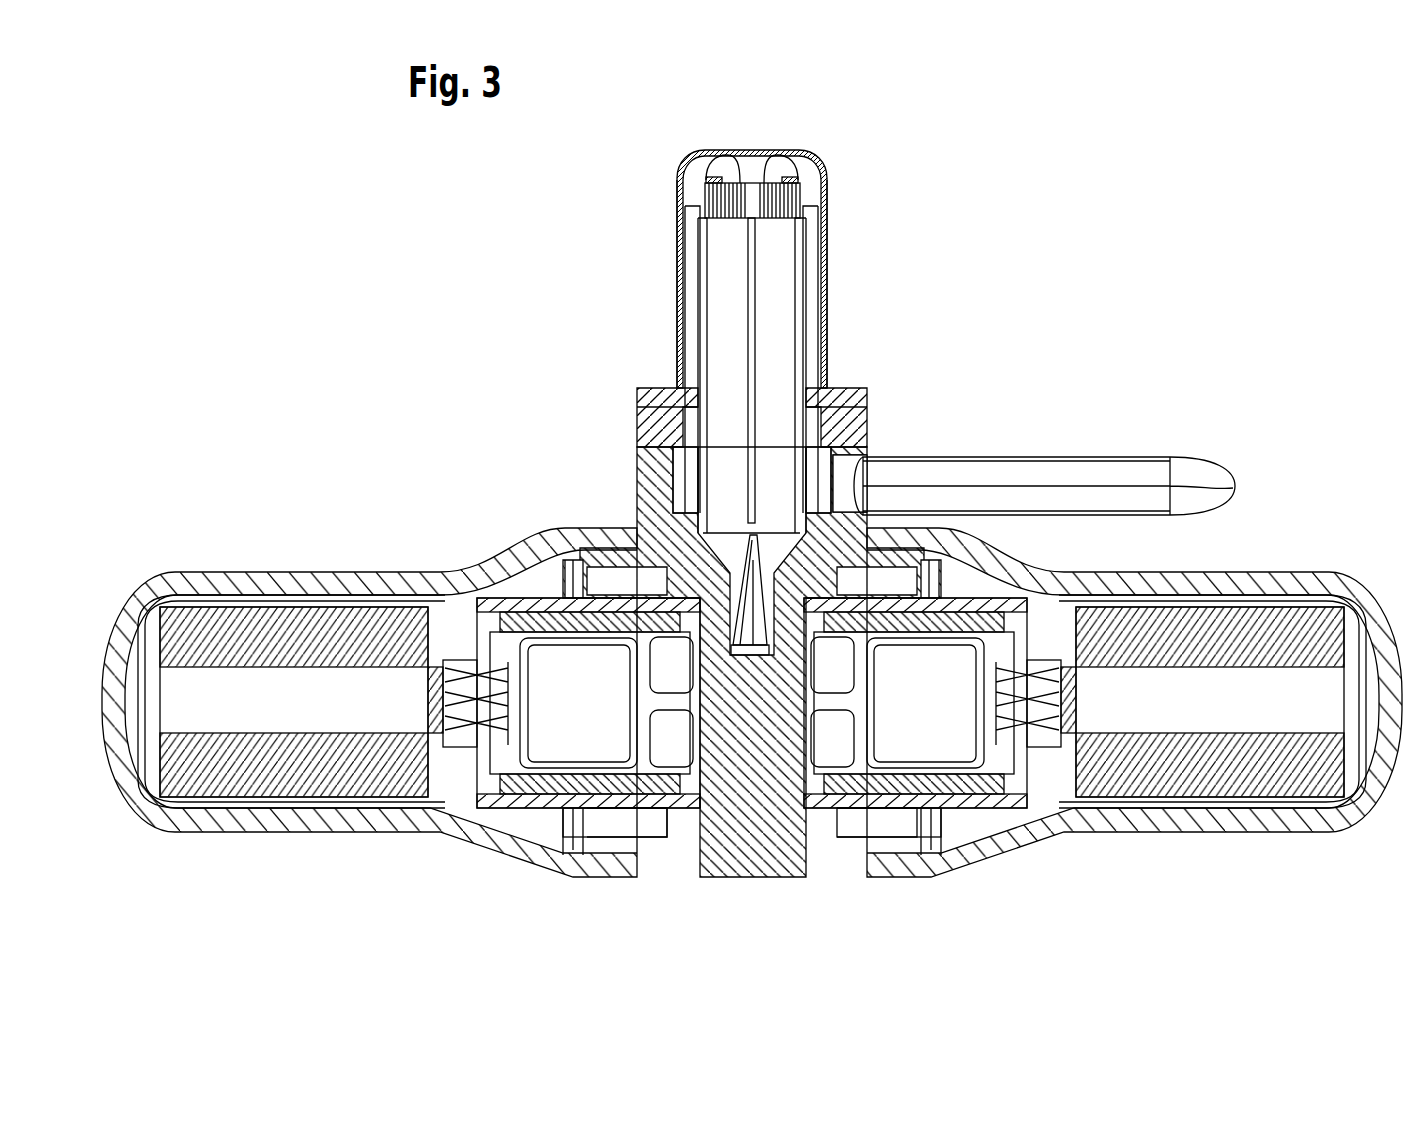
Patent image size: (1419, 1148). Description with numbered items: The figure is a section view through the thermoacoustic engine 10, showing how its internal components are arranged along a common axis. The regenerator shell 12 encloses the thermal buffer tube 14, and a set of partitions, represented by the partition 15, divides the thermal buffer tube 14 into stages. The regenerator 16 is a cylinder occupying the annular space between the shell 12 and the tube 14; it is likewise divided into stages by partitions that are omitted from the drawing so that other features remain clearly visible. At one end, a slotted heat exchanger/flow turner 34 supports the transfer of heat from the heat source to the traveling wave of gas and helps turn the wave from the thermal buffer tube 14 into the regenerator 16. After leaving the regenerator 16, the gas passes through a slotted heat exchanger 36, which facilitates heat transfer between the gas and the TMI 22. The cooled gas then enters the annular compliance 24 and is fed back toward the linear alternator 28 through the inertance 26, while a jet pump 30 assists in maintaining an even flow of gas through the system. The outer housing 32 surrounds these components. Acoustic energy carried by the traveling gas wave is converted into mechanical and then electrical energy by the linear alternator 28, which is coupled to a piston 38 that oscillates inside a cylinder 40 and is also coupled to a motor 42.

The valve assembly 10 is at (318, 248).
The regenerator shell 12 is at (688, 170).
The thermal buffer tube 14 is at (703, 285).
The partition 15 is at (757, 273).
The regenerator 16 is at (680, 337).
The TMI 22 is at (655, 428).
The annular compliance 24 is at (693, 482).
The inertance 26 is at (1145, 470).
The linear alternator 28 is at (703, 867).
The jet pump 30 is at (748, 645).
The outer housing 32 is at (263, 580).
The slotted heat exchanger/flow turner 34 is at (813, 188).
The slotted heat exchanger 36 is at (818, 432).
The piston 38 is at (550, 757).
The cylinder 40 is at (606, 815).
The motor 42 is at (275, 790).